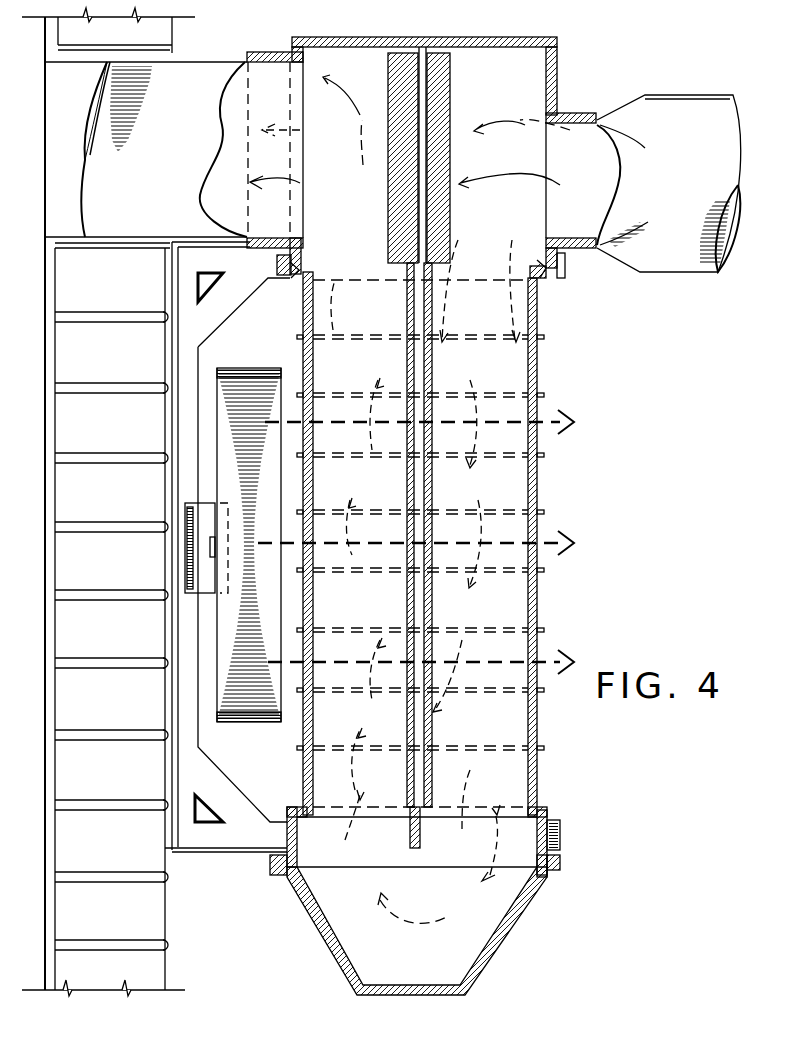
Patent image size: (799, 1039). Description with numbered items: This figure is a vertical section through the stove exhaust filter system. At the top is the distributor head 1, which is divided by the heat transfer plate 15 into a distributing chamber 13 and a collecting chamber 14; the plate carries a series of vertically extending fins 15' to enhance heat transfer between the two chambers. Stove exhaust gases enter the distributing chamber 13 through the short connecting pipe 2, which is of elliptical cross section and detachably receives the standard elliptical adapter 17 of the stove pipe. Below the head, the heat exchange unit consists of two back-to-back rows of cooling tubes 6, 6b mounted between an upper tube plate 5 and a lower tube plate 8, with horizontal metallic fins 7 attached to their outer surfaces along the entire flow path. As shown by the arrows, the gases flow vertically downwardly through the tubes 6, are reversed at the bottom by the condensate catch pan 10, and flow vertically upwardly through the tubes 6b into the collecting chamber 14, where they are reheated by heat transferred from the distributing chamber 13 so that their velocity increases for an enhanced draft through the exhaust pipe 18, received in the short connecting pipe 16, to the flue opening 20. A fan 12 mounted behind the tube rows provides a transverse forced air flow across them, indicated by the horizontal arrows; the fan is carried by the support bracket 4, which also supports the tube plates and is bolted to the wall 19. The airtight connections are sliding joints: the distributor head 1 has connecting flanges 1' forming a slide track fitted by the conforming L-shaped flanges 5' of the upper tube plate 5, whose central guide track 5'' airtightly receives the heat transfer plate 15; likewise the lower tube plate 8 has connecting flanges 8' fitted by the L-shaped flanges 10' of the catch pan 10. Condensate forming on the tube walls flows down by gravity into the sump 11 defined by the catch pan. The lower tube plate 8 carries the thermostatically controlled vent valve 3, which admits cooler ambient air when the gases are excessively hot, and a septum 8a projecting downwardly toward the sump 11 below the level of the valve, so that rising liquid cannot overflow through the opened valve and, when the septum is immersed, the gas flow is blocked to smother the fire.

The distributor head 1 is at (444, 416).
The connecting flanges 1' is at (308, 256).
The short connecting pipe 2 is at (570, 252).
The vent valve 3 is at (562, 838).
The support bracket 4 is at (218, 309).
The upper tube plate 5 is at (557, 291).
The L-shaped flanges 5' is at (267, 266).
The guide track 5'' is at (392, 427).
The cooling tubes 6 is at (482, 318).
The cooling tubes 6b is at (372, 315).
The metallic fins 7 is at (538, 392).
The lower tube plate 8 is at (412, 821).
The connecting flanges 8' is at (408, 862).
The septum 8a is at (421, 835).
The condensate catch pan 10 is at (417, 931).
The L-shaped flanges 10' is at (580, 866).
The sump 11 is at (387, 849).
The fan 12 is at (226, 368).
The distributing chamber 13 is at (510, 161).
The collecting chamber 14 is at (350, 175).
The heat transfer plate 15 is at (454, 158).
The fins 15' is at (384, 158).
The short connecting pipe 16 is at (274, 52).
The elliptical adapter 17 is at (667, 115).
The exhaust pipe 18 is at (200, 84).
The wall 19 is at (122, 361).
The flue opening 20 is at (74, 145).